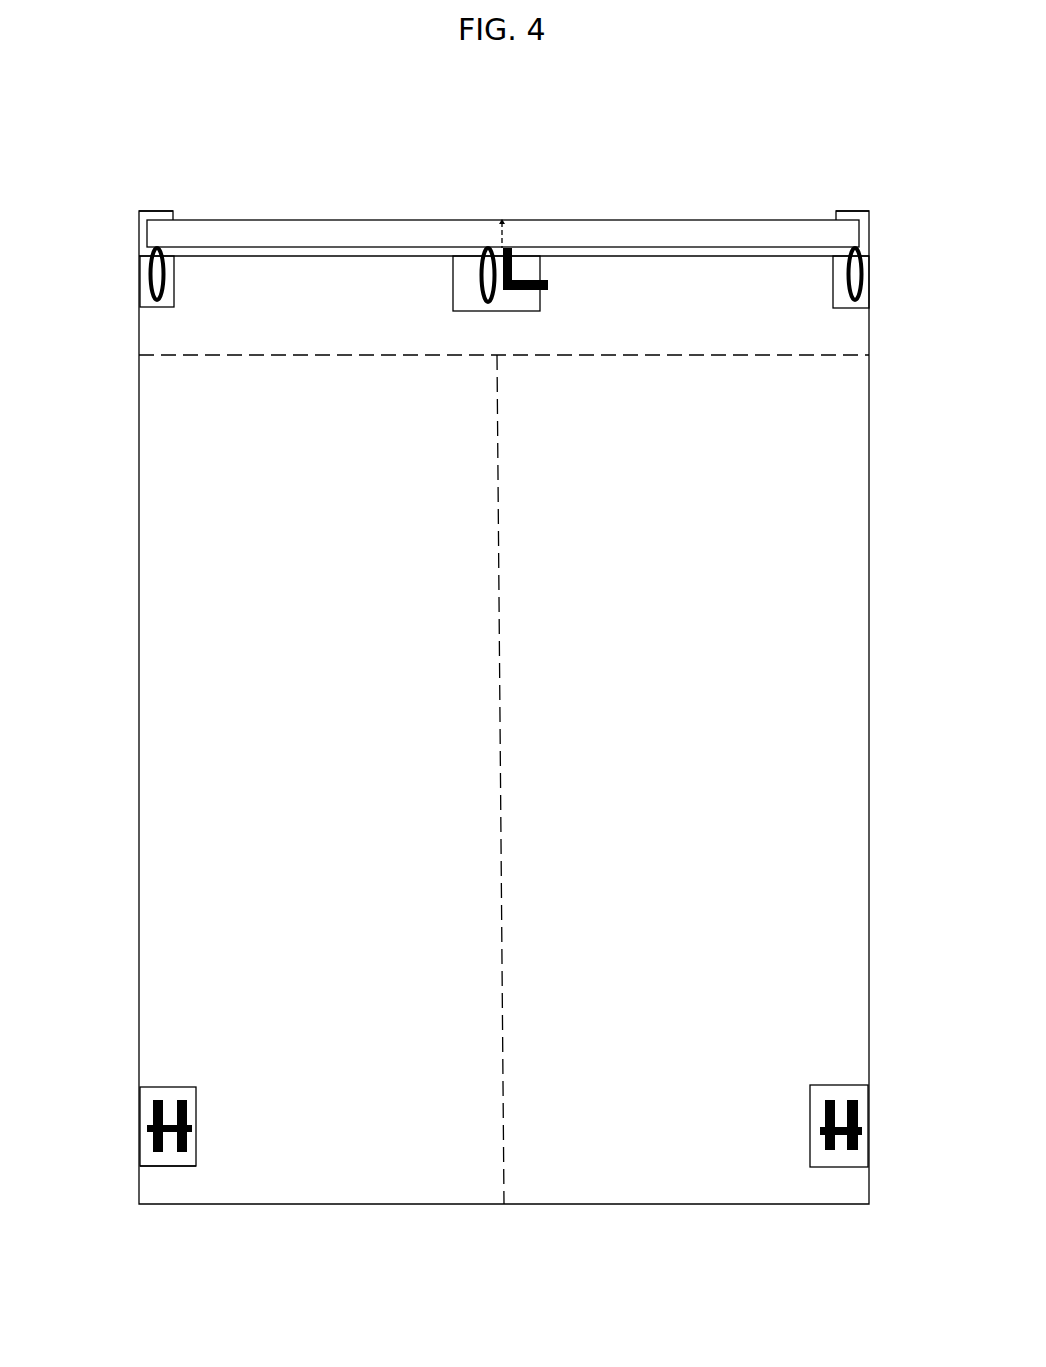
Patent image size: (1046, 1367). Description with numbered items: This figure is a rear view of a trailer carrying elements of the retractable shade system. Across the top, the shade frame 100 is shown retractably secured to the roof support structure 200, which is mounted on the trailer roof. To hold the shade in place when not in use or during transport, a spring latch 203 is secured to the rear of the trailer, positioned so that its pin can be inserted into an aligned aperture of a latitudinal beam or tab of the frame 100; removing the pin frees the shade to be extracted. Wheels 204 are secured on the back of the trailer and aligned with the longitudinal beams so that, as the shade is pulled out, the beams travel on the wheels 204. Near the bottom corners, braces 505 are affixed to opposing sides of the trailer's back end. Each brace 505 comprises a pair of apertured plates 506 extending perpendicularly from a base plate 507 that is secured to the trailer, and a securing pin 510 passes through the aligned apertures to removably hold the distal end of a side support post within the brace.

The frame 100 is at (713, 228).
The roof support structure 200 is at (157, 211).
The spring latch 203 is at (515, 267).
The wheel 204 is at (168, 257).
The brace 505 is at (188, 1176).
The plate 506 is at (184, 1101).
The base plate 507 is at (172, 1155).
The securing pin 510 is at (148, 1132).